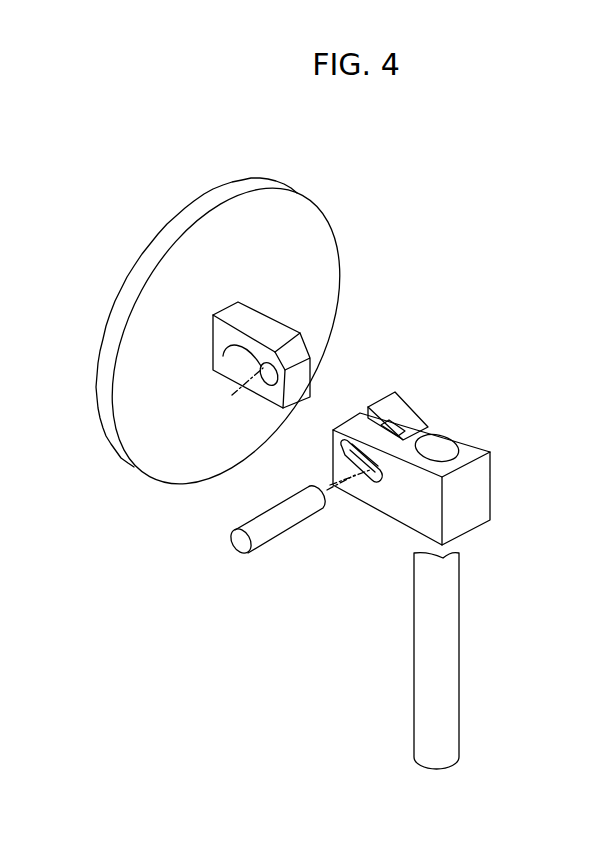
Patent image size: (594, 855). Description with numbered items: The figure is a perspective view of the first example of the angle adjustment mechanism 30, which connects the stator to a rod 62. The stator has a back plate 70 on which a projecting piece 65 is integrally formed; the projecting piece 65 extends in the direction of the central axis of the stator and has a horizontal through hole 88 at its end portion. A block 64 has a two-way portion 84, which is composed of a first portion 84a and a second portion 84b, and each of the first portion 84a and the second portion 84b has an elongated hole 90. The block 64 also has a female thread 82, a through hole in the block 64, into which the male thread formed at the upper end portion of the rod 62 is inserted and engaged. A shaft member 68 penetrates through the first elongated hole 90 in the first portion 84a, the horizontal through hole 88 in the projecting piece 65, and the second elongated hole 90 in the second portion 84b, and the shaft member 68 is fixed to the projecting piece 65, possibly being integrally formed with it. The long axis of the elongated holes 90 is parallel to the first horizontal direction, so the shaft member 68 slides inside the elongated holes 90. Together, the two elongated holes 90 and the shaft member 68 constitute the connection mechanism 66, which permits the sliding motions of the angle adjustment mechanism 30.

The angle adjustment mechanism 30 is at (188, 149).
The back plate 70 is at (333, 228).
The horizontal through hole 88 is at (213, 370).
The projecting piece 65 is at (263, 313).
The connection mechanism 66 is at (360, 392).
The block 64 is at (440, 420).
The second portion 84b is at (405, 397).
The female thread 82 is at (447, 442).
The two-way portion 84 is at (343, 404).
The first portion 84a is at (345, 495).
The elongated hole 90 is at (377, 477).
The shaft member 68 is at (267, 537).
The rod 62 is at (462, 628).